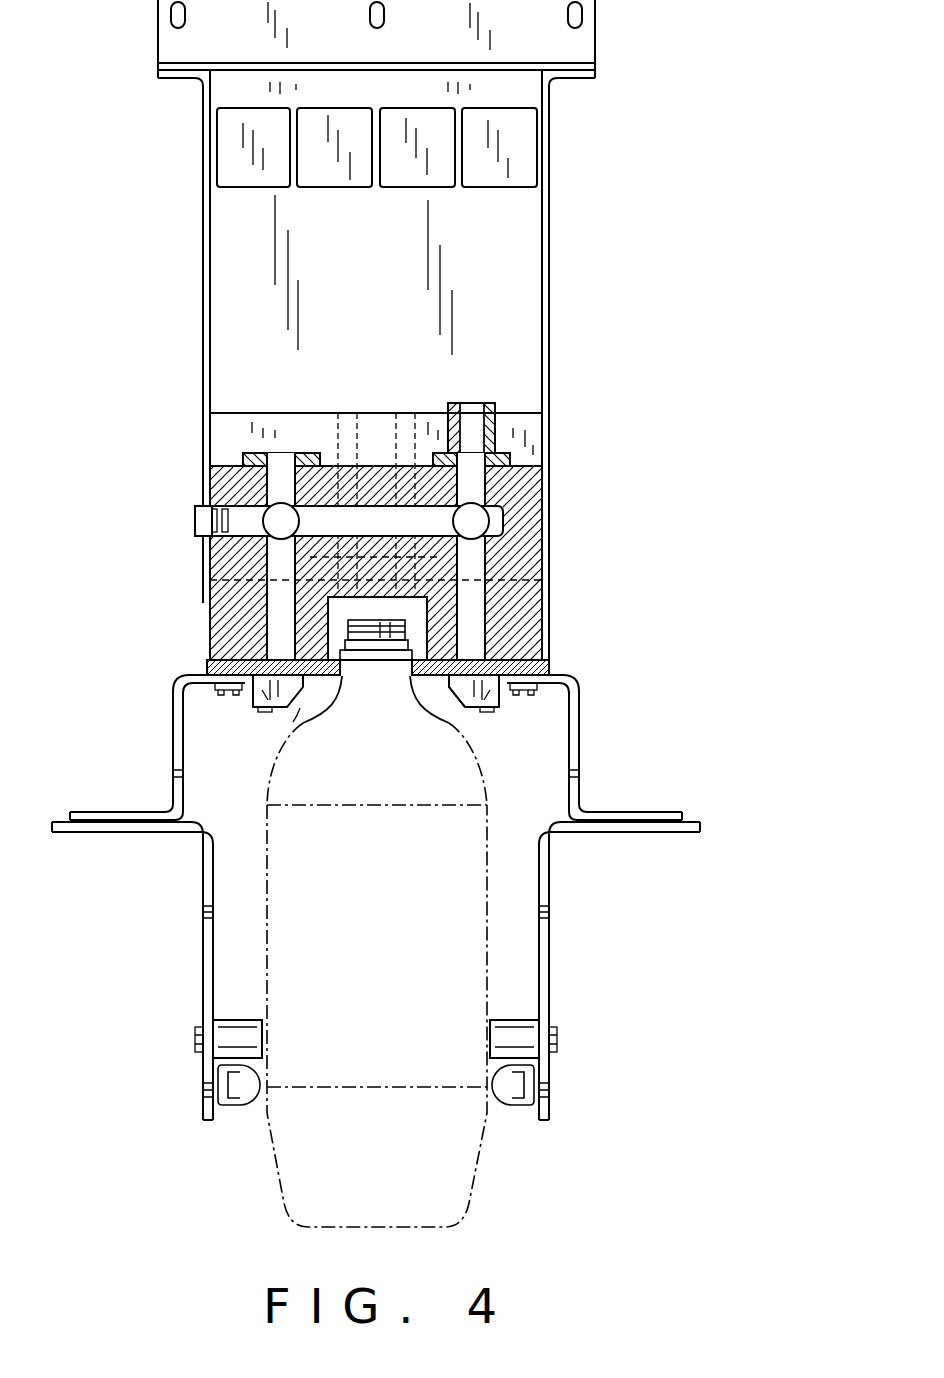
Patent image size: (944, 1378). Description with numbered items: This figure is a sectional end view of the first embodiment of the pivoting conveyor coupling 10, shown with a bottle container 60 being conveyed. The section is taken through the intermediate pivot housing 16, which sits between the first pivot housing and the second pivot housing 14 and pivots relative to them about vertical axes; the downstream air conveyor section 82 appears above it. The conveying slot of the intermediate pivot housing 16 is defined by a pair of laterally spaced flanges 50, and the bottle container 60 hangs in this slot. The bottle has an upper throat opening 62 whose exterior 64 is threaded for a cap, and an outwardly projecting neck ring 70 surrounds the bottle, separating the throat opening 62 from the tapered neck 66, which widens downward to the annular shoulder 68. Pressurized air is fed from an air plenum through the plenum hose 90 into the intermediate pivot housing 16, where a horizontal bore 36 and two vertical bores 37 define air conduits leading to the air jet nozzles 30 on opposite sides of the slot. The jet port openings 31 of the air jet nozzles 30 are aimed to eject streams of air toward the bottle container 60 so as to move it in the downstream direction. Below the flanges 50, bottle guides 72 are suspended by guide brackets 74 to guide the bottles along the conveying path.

The pivoting conveyor coupling 10 is at (391, 613).
The second pivot housing 14 is at (228, 437).
The intermediate pivot housing 16 is at (233, 488).
The air jet nozzles 30 is at (260, 705).
The jet port openings 31 is at (470, 707).
The horizontal bore 36 is at (440, 512).
The vertical bores 37 is at (458, 567).
The flanges 50 is at (207, 667).
The bottle container 60 is at (353, 951).
The throat opening 62 is at (385, 619).
The exterior 64 is at (405, 629).
The neck 66 is at (300, 727).
The annular shoulder 68 is at (287, 742).
The neck ring 70 is at (327, 652).
The bottle guides 72 is at (235, 1035).
The guide brackets 74 is at (578, 730).
The downstream air conveyor section 82 is at (493, 272).
The plenum hose 90 is at (490, 402).